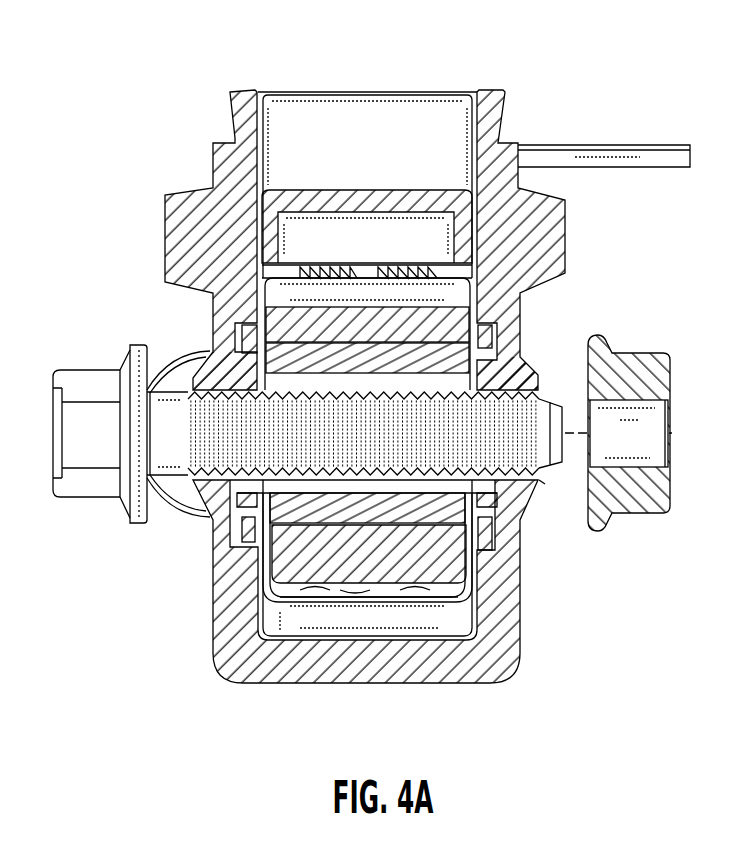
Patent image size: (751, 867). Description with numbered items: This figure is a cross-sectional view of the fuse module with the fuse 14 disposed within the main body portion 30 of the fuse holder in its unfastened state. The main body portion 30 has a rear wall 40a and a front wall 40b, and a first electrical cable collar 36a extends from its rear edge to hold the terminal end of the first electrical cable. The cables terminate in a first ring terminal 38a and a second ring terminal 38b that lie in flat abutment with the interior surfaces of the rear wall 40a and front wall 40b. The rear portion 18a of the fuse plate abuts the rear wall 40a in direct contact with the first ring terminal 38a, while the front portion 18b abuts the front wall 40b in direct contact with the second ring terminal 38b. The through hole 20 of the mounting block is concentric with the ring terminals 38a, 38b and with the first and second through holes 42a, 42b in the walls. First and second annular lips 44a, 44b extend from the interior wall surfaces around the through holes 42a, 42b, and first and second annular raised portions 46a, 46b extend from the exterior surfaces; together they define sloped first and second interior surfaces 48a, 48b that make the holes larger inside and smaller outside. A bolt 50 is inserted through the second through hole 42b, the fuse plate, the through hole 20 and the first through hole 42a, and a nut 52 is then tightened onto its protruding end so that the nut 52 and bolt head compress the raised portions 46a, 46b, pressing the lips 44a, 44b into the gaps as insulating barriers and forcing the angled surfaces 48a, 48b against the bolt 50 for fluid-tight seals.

The fuse 14 is at (425, 414).
The rear portion of the fuse plate 18a is at (512, 276).
The front portion of the fuse plate 18b is at (212, 268).
The through hole of the mounting block 20 is at (368, 497).
The main body portion 30 is at (368, 110).
The first electrical cable collar 36a is at (342, 272).
The first ring terminal 38a is at (482, 590).
The second ring terminal 38b is at (222, 594).
The rear wall 40a is at (453, 606).
The front wall 40b is at (239, 627).
The first through hole 42a is at (546, 489).
The second through hole 42b is at (185, 482).
The first annular lip 44a is at (486, 378).
The second annular lip 44b is at (212, 383).
The first annular raised portion 46a is at (532, 376).
The second annular raised portion 46b is at (160, 376).
The first interior surface 48a is at (492, 529).
The second interior surface 48b is at (250, 529).
The bolt 50 is at (90, 378).
The nut 52 is at (660, 372).